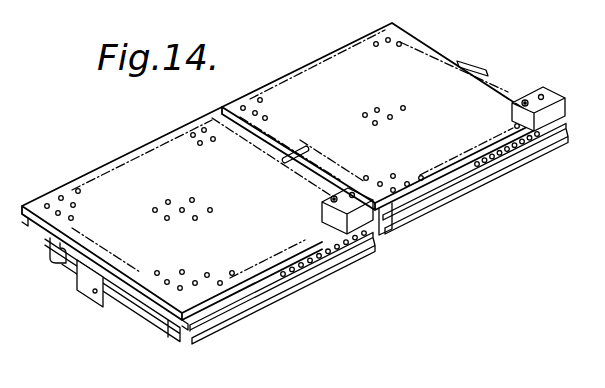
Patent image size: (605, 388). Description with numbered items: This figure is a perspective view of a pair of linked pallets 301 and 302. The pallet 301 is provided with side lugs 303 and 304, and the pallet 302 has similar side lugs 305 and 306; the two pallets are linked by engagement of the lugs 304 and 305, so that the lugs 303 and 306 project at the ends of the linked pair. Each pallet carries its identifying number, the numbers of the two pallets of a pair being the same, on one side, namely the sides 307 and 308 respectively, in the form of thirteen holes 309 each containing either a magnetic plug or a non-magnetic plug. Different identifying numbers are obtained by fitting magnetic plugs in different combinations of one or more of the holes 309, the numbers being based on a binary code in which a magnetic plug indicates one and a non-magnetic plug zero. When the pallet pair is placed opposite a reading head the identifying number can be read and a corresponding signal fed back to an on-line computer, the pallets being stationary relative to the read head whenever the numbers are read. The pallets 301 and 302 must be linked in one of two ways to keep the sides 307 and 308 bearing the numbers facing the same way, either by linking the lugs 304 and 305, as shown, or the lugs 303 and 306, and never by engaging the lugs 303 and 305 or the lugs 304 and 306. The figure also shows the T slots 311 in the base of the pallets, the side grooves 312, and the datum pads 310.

The pallet 301 is at (165, 138).
The pallet 302 is at (312, 64).
The side lug 303 is at (140, 297).
The side lug 304 is at (284, 158).
The side lug 305 is at (345, 183).
The side lug 306 is at (492, 53).
The side 307 is at (272, 286).
The side 308 is at (428, 197).
The holes 309 is at (538, 140).
The datum pads 310 is at (560, 78).
The T slots 311 is at (52, 262).
The side grooves 312 is at (26, 203).